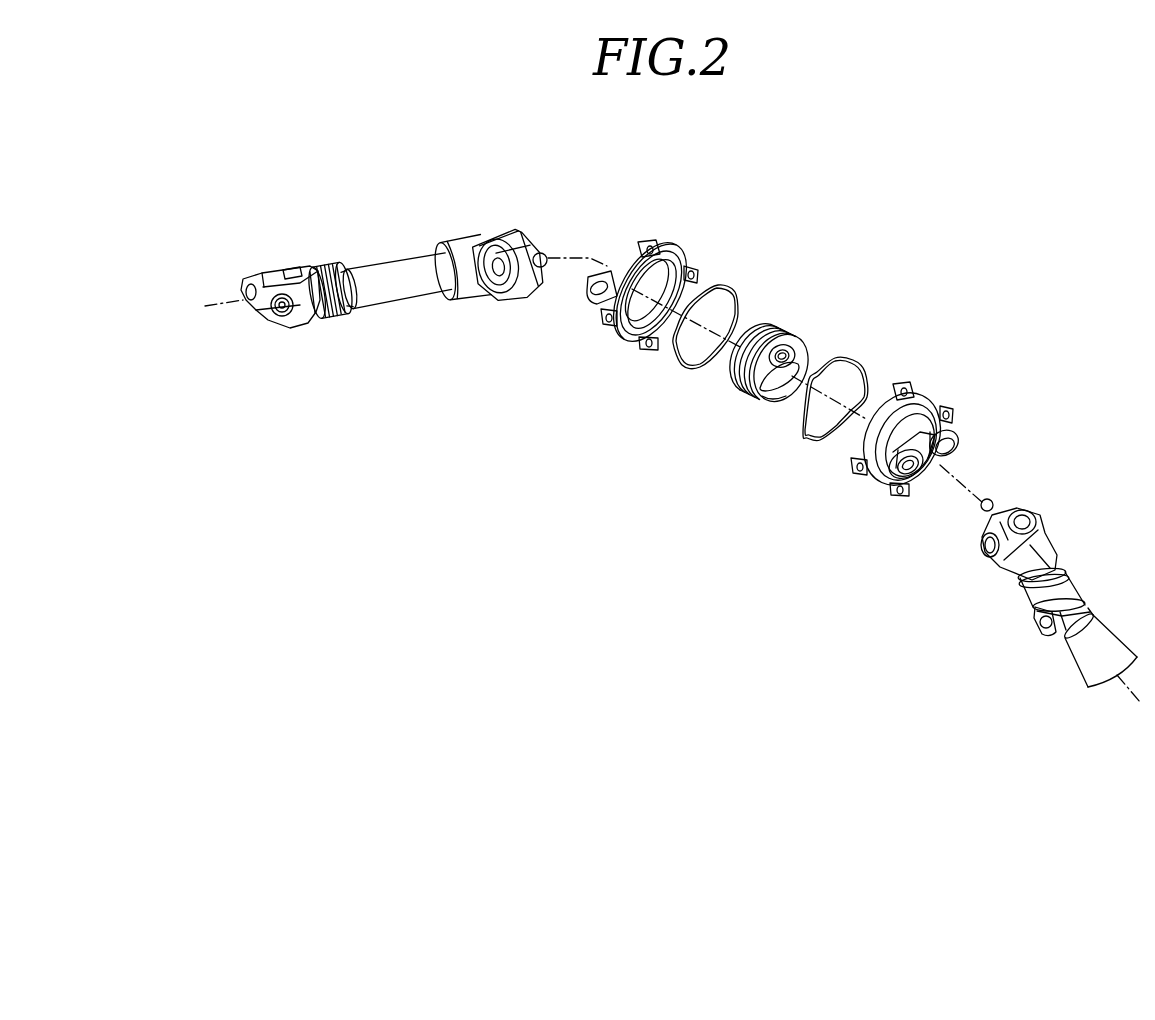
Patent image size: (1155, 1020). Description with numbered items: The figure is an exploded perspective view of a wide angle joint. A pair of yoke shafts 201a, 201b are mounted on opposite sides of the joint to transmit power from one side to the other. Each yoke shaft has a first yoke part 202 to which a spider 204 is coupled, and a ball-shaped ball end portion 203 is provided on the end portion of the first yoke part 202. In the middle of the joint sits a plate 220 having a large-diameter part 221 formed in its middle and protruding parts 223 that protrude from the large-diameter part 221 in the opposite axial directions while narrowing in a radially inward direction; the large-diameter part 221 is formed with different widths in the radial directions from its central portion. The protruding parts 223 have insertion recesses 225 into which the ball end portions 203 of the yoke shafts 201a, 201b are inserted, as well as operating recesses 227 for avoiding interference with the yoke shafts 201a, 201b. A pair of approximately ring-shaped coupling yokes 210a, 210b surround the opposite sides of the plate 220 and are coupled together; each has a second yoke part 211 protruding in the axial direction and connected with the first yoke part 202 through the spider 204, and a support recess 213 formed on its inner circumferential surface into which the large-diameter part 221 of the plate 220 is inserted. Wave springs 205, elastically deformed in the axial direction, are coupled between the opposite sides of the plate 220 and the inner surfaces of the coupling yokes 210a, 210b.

The yoke shaft 201a is at (400, 238).
The yoke shaft 201b is at (1065, 513).
The first yoke part 202 is at (500, 232).
The ball end portion 203 is at (543, 253).
The spider 204 is at (492, 285).
The wave spring 205 is at (668, 373).
The coupling yoke 210a is at (678, 238).
The coupling yoke 210b is at (947, 380).
The second yoke part 211 is at (595, 296).
The support recess 213 is at (688, 300).
The plate 220 is at (765, 352).
The large-diameter part 221 is at (738, 387).
The protruding part 223 is at (757, 388).
The insertion recess 225 is at (782, 345).
The operating recess 227 is at (770, 392).